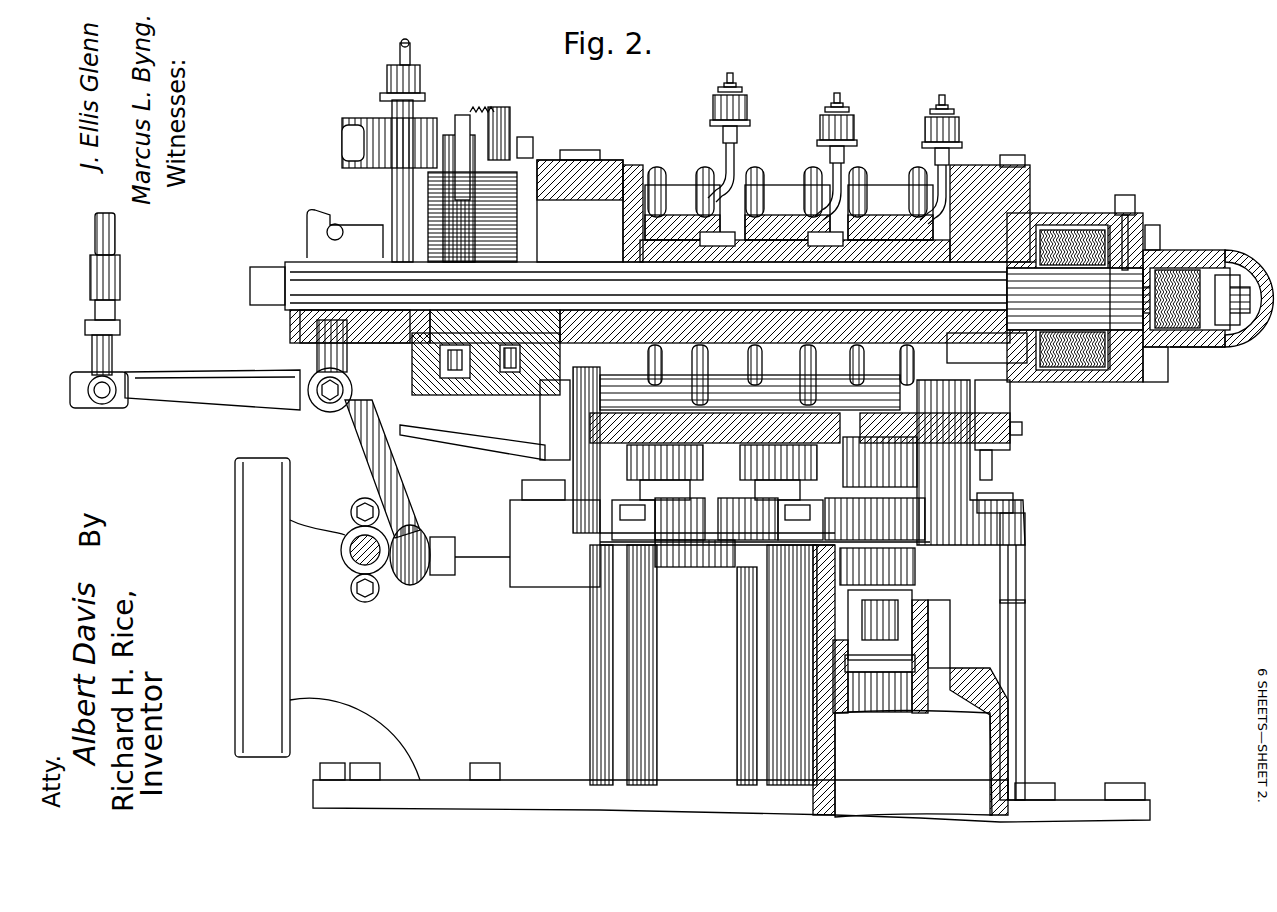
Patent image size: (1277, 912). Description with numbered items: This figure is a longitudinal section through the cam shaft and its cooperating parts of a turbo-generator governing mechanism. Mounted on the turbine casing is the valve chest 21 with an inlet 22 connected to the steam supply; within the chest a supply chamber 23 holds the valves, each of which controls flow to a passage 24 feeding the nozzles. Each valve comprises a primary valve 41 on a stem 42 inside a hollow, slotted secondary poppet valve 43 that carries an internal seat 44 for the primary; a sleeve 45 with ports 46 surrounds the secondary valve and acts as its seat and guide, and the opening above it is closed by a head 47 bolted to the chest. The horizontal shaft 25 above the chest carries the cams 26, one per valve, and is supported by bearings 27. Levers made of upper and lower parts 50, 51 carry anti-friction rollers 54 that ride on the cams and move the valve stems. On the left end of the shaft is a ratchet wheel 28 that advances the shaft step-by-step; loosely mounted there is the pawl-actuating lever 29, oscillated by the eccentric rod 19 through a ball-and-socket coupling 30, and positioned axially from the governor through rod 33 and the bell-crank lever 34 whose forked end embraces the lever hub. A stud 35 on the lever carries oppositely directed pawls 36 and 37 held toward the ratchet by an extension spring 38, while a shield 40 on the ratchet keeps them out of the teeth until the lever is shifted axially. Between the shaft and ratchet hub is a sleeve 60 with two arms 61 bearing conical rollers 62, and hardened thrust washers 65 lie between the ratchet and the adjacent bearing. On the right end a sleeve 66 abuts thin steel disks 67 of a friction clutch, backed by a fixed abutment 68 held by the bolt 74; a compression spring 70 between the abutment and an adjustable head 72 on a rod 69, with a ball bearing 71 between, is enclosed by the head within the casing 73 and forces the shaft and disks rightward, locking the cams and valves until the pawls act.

The rod 19 is at (395, 565).
The valve chest 21 is at (1025, 641).
The inlet 22 is at (235, 596).
The supply chamber 23 is at (936, 634).
The passage 24 is at (913, 764).
The horizontal shaft 25 is at (750, 287).
The cams 26 is at (700, 195).
The bearings 27 is at (782, 315).
The ratchet wheel 28 is at (518, 192).
The pawl-actuating lever 29 is at (392, 192).
The ball-and-socket coupling 30 is at (350, 565).
The rod 33 is at (116, 240).
The bell-crank lever 34 is at (203, 398).
The stud 35 is at (342, 142).
The pawl 36 is at (458, 135).
The pawl 37 is at (510, 113).
The extension spring 38 is at (485, 110).
The shield 40 is at (522, 170).
The primary valve 41 is at (900, 612).
The stem 42 is at (918, 576).
The secondary poppet valve 43 is at (910, 640).
The internal seat 44 is at (840, 630).
The sleeve 45 is at (920, 656).
The ports 46 is at (836, 660).
The head 47 is at (751, 454).
The upper lever part 50 is at (771, 239).
The lower lever part 51 is at (800, 389).
The anti-friction rollers 54 is at (672, 170).
The sleeve 60 is at (492, 312).
The arms 61 is at (452, 380).
The conical roller 62 is at (478, 395).
The thrust washers 65 is at (514, 375).
The sleeve 66 is at (1040, 232).
The thin steel disks 67 is at (1085, 230).
The fixed abutment 68 is at (1158, 232).
The rod 69 is at (1170, 350).
The compression spring 70 is at (1192, 268).
The ball bearing 71 is at (1205, 350).
The adjustable head 72 is at (1243, 268).
The inclosing casing 73 is at (1168, 262).
The bolt 74 is at (1135, 208).